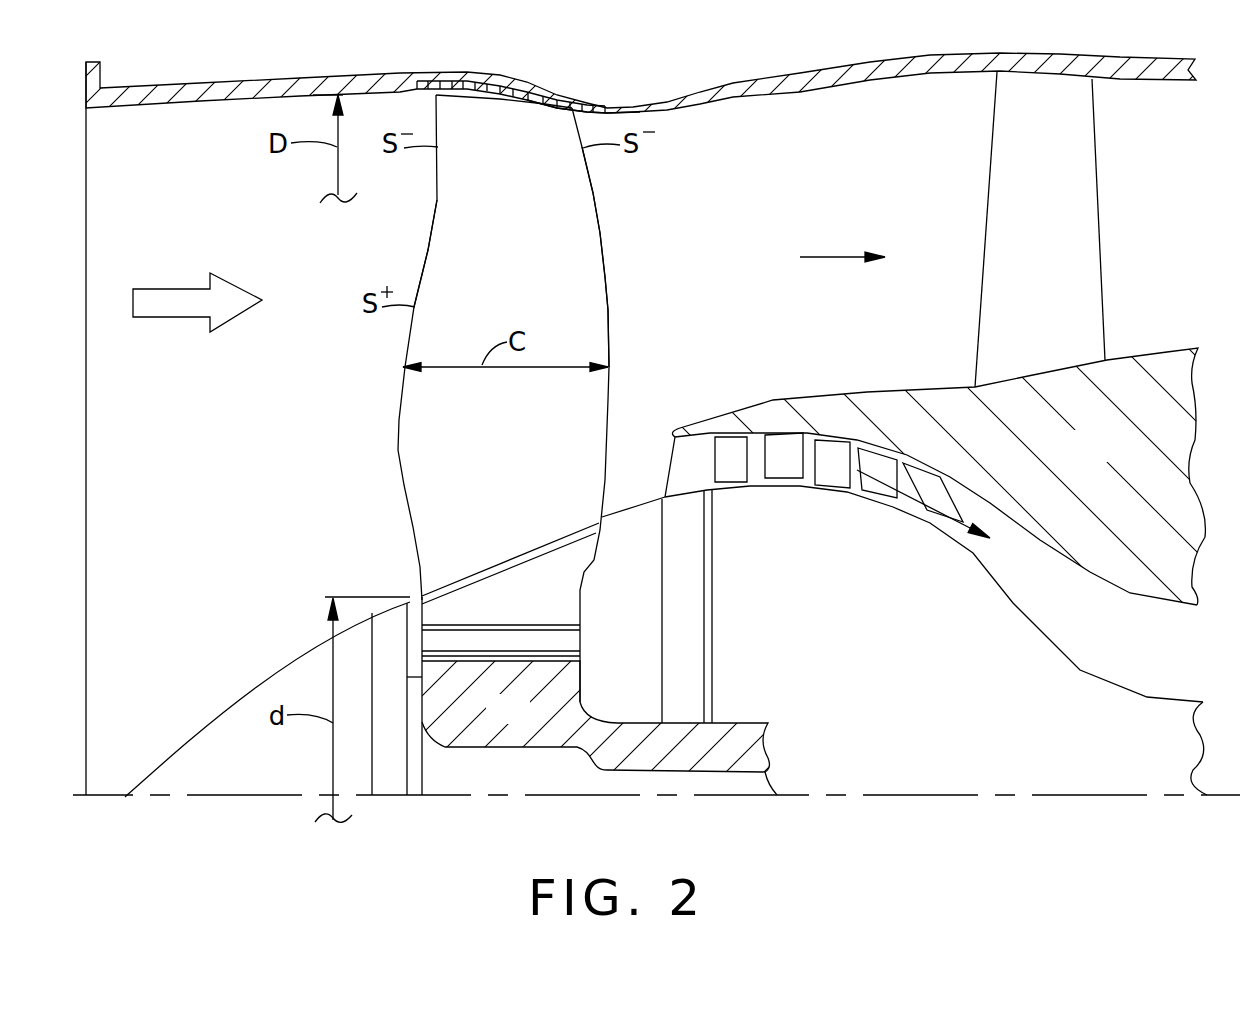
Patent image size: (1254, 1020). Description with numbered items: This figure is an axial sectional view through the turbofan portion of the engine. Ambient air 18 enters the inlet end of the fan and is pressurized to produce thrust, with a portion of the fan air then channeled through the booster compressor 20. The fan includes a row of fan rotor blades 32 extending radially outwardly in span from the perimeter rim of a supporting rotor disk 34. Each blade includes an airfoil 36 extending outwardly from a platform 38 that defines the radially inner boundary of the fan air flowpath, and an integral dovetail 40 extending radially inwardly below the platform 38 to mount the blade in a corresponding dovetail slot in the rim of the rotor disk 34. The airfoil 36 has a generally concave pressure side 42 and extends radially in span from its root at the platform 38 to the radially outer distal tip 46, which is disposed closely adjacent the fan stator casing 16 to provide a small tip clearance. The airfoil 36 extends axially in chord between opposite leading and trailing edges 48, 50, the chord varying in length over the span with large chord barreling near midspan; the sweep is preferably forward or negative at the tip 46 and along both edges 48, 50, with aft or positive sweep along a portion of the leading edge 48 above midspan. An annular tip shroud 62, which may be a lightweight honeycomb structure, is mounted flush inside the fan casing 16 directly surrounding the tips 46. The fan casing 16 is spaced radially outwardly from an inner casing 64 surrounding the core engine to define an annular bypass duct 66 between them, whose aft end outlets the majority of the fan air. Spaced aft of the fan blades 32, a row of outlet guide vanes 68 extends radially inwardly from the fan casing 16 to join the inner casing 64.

The fan stator casing 16 is at (273, 79).
The ambient air 18 is at (183, 318).
The booster compressor 20 is at (830, 428).
The fan rotor blade 32 is at (443, 398).
The rotor disk 34 is at (525, 721).
The airfoil 36 is at (595, 238).
The platform 38 is at (568, 528).
The dovetail 40 is at (563, 643).
The pressure side 42 is at (471, 445).
The tip 46 is at (468, 94).
The leading edge 48 is at (428, 250).
The trailing edge 50 is at (608, 312).
The tip shroud 62 is at (549, 118).
The inner casing 64 is at (1110, 459).
The bypass duct 66 is at (826, 210).
The outlet guide vane 68 is at (1018, 266).